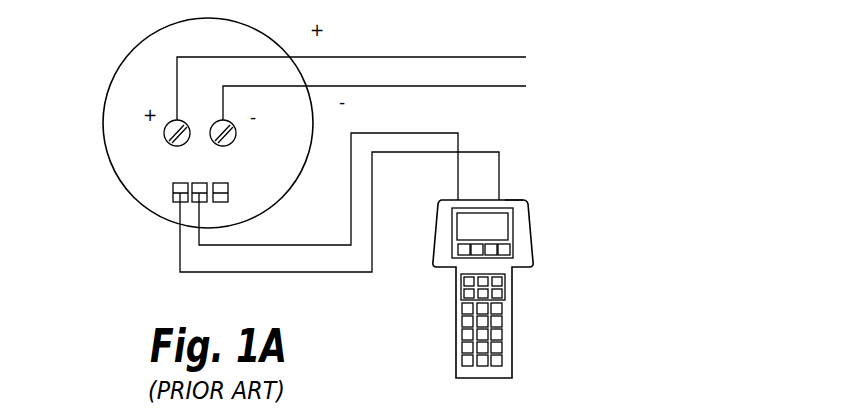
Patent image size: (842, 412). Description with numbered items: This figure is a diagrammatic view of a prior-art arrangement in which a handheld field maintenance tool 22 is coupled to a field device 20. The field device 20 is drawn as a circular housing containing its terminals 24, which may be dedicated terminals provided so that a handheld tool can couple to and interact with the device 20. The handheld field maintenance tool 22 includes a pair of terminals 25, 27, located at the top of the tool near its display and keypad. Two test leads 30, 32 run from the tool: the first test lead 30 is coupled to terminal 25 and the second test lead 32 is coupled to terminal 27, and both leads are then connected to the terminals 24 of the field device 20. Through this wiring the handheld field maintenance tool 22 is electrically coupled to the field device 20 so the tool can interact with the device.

The field device 20 is at (104, 106).
The handheld field maintenance tool 22 is at (452, 290).
The terminals 24 is at (190, 183).
The terminal 25 is at (458, 200).
The terminal 27 is at (513, 200).
The test lead 30 is at (223, 245).
The test lead 32 is at (260, 272).